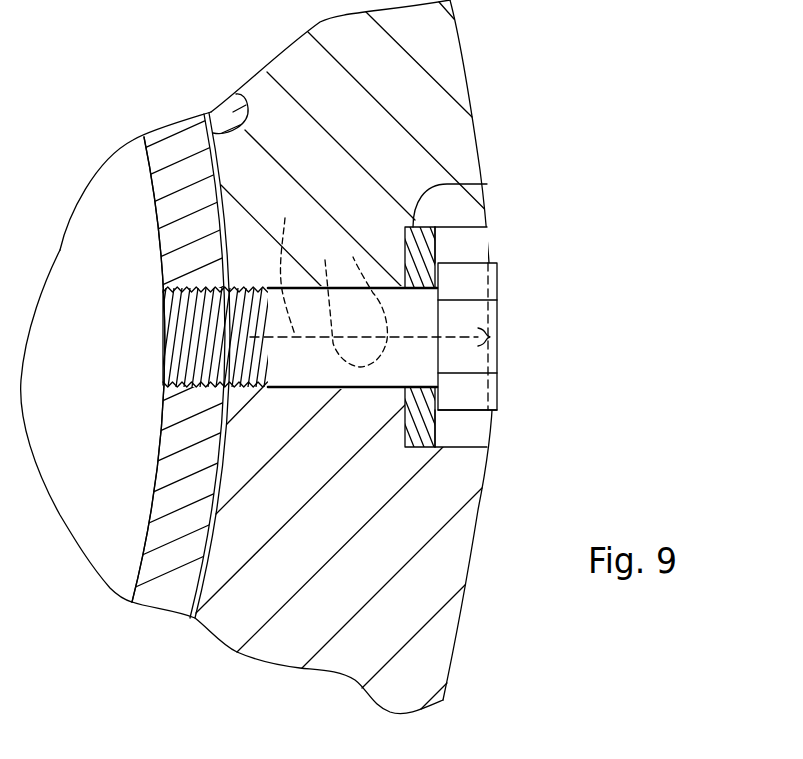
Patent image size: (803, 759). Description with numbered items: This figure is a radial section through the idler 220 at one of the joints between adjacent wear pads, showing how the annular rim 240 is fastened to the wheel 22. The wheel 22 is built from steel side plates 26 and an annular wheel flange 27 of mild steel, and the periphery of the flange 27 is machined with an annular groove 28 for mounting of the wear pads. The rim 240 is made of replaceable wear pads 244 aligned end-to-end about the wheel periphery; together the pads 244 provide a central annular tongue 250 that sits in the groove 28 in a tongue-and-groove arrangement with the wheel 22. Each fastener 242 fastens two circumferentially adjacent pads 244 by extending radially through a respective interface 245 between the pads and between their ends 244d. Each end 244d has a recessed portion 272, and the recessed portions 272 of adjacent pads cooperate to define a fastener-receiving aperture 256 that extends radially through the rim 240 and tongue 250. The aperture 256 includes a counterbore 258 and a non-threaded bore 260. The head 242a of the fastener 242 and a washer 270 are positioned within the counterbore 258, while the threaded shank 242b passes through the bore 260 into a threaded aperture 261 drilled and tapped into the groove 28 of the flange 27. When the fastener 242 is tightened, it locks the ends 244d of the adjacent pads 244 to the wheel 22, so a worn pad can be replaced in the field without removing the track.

The wheel 22 is at (102, 210).
The side plates 26 is at (90, 370).
The wheel rim or flange 27 is at (157, 470).
The annular groove 28 is at (248, 95).
The idler 220 is at (605, 146).
The annular rim 240 is at (502, 109).
The fastener 242 is at (468, 313).
The head 242a is at (480, 358).
The threaded shank 242b is at (310, 368).
The wear pads 244 is at (463, 54).
The ends 244d is at (342, 301).
The interface 245 is at (285, 263).
The central annular tongue 250 is at (214, 162).
The fastener-receiving aperture 256 is at (483, 390).
The counterbore 258 is at (447, 250).
The non-threaded bore 260 is at (395, 388).
The threaded aperture 261 is at (193, 298).
The washer 270 is at (487, 184).
The recessed portion 272 is at (442, 228).